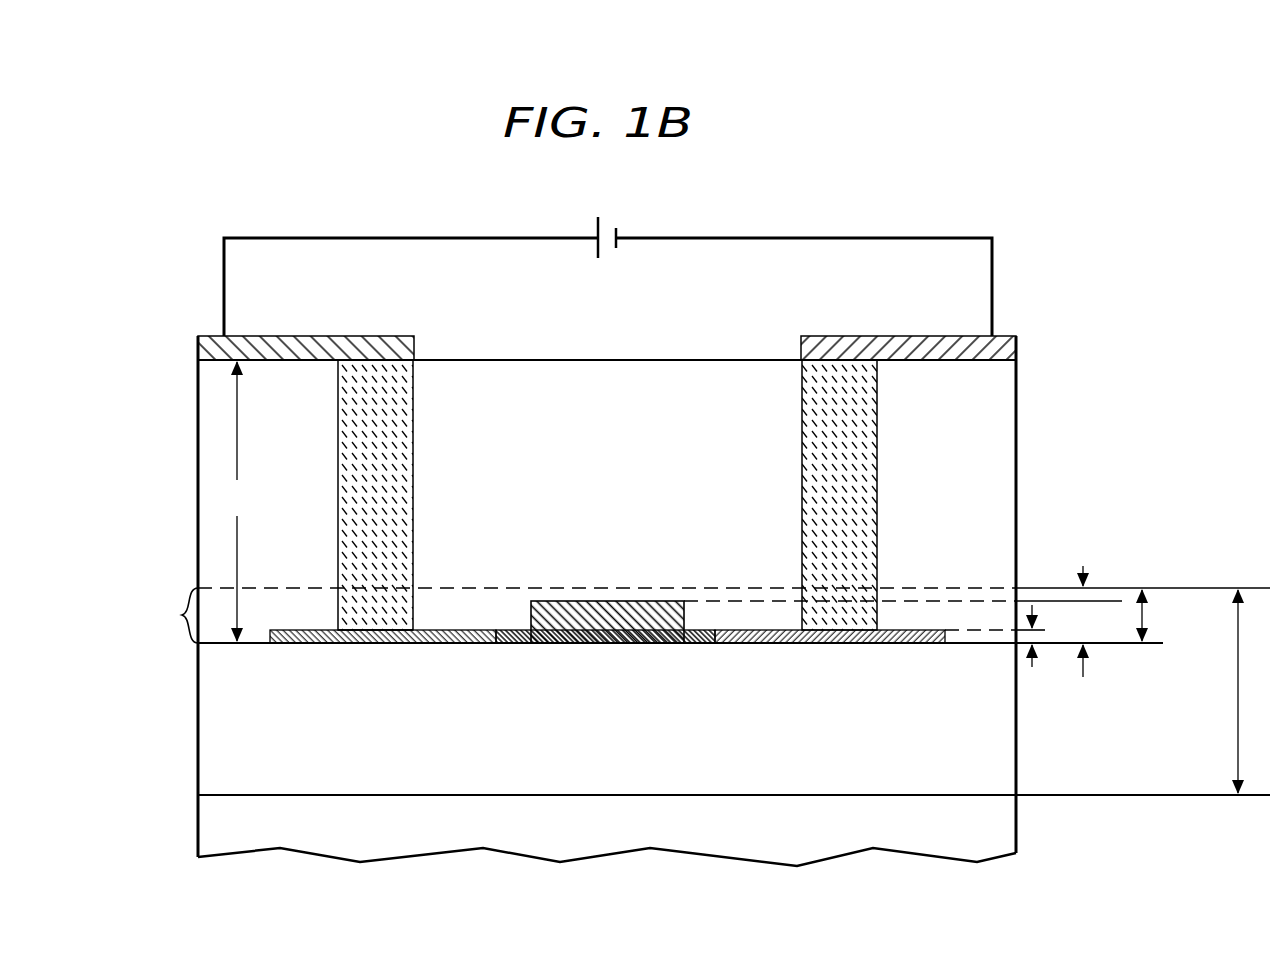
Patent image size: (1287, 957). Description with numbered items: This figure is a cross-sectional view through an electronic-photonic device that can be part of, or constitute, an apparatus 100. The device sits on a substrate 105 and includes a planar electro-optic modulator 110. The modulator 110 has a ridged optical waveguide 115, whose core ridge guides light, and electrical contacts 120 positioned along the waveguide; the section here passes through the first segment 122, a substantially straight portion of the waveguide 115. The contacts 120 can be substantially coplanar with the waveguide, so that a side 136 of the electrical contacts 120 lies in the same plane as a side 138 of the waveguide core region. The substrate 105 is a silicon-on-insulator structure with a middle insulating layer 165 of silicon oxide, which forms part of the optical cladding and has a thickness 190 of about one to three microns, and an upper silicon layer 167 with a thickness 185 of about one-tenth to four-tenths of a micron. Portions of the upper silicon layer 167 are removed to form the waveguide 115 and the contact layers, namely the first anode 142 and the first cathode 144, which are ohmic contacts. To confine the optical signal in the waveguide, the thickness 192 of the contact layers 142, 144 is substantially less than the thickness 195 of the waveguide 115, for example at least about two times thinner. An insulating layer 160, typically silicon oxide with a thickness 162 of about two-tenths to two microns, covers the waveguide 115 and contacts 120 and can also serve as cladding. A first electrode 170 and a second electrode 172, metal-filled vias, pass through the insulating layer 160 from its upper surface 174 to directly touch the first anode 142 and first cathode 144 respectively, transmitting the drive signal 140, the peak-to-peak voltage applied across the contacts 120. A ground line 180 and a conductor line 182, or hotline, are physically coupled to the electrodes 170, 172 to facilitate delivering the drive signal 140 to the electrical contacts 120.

The apparatus 100 is at (188, 210).
The substrate 105 is at (197, 828).
The electro-optic modulator 110 is at (1057, 256).
The optical waveguide 115 is at (543, 560).
The electrical contacts 120 is at (331, 704).
The first segment 122 is at (599, 645).
The side of the electrical contacts 136 is at (310, 650).
The side of the core region 138 is at (541, 650).
The drive signal 140 is at (597, 228).
The first anode 142 is at (369, 645).
The first cathode 144 is at (830, 645).
The insulating layer 160 is at (197, 450).
The thickness of the insulating layer 162 is at (228, 501).
The middle insulating layer 165 is at (197, 733).
The upper silicon layer 167 is at (165, 615).
The first electrode 170 is at (414, 432).
The second electrode 172 is at (803, 431).
The upper surface of the insulating layer 174 is at (608, 356).
The ground line 180 is at (206, 347).
The conductor line 182 is at (1012, 352).
The thickness of the top layer 185 is at (1144, 614).
The thickness of the middle layer 190 is at (1239, 691).
The thickness of the contact layers 192 is at (1034, 672).
The thickness of the waveguide 195 is at (1088, 674).